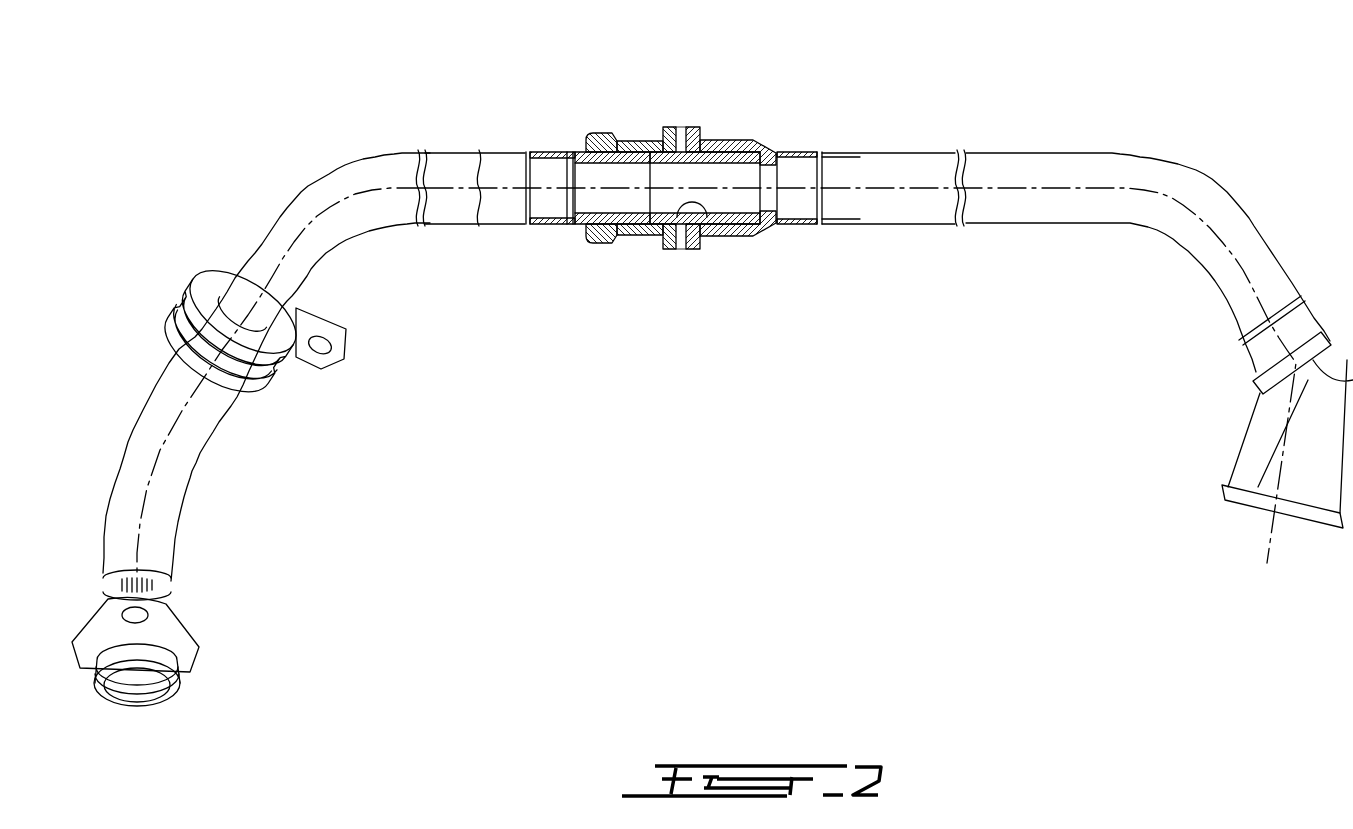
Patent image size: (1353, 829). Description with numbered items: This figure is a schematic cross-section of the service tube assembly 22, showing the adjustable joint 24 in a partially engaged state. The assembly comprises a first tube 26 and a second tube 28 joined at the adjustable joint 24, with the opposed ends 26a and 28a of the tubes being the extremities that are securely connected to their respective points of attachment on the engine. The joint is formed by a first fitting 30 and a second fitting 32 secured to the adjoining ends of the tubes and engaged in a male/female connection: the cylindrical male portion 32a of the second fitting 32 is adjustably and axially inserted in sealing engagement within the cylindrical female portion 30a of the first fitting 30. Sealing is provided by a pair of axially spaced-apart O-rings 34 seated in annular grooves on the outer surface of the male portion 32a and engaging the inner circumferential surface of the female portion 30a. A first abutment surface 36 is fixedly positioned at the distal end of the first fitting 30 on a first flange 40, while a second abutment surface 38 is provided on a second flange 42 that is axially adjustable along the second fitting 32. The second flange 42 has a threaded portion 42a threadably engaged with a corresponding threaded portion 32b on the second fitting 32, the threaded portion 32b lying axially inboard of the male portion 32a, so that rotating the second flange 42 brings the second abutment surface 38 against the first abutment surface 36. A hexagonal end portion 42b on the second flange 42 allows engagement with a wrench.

The service tube assembly 22 is at (950, 558).
The adjustable joint 24 is at (680, 374).
The first tube 26 is at (1262, 236).
The opposed end of the first tube 26a is at (1312, 538).
The second tube 28 is at (135, 428).
The opposed end of the second tube 28a is at (214, 656).
The first fitting 30 is at (765, 148).
The female portion 30a is at (790, 222).
The second fitting 32 is at (570, 142).
The male portion 32a is at (712, 237).
The threaded portion 32b is at (585, 228).
The O-rings 34 is at (747, 140).
The first abutment surface 36 is at (678, 128).
The second abutment surface 38 is at (681, 240).
The first flange 40 is at (708, 118).
The second flange 42 is at (660, 256).
The threaded portion 42a is at (645, 141).
The hexagonal end portion 42b is at (605, 135).